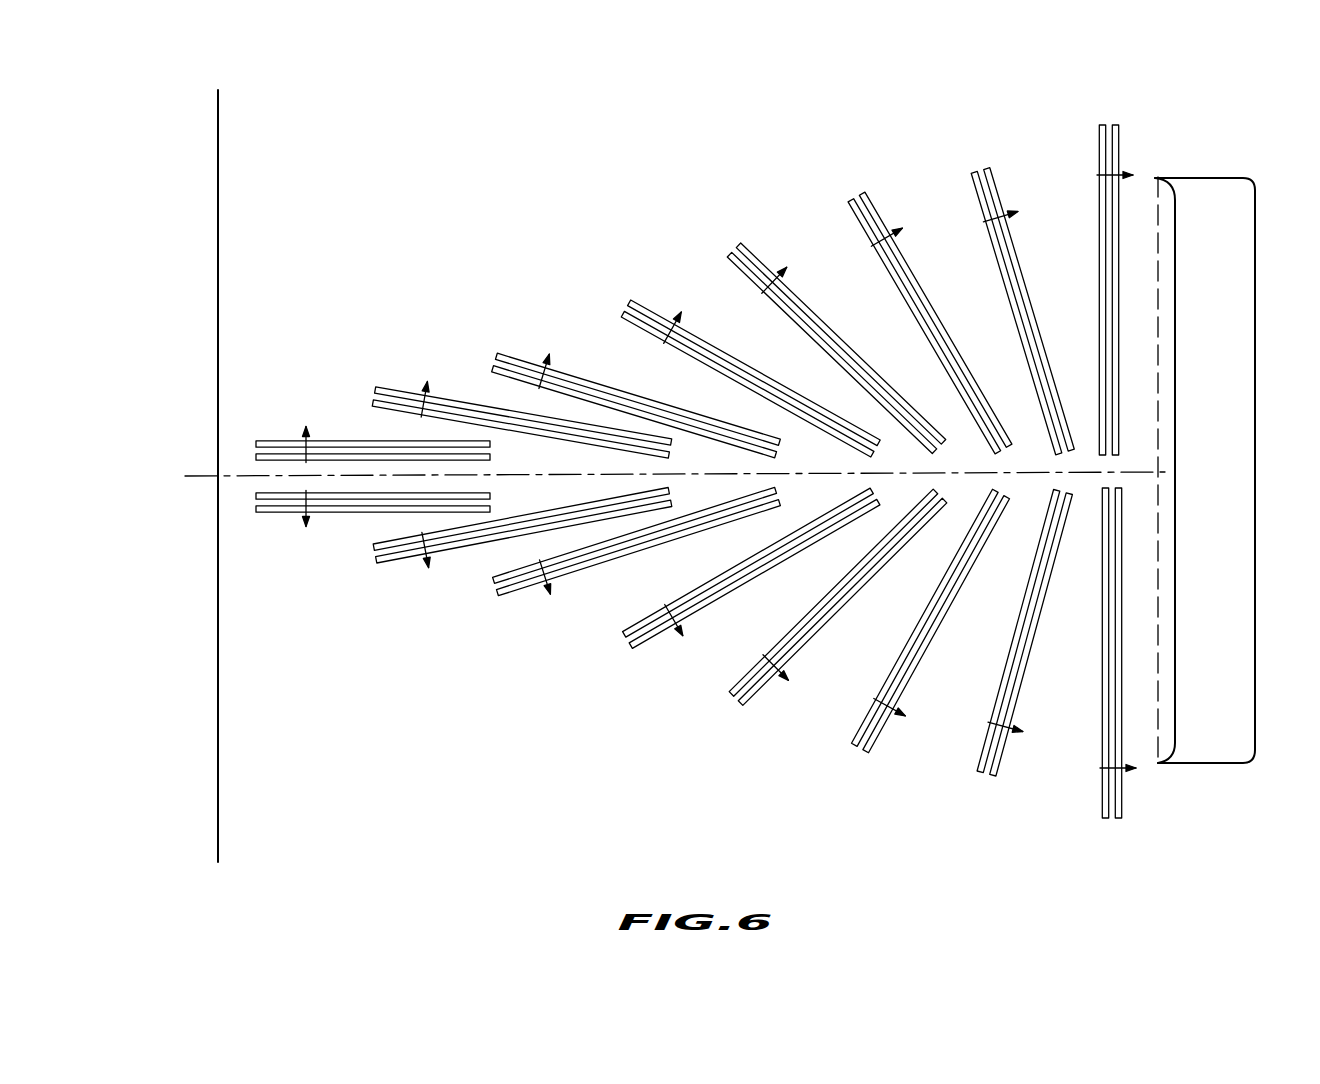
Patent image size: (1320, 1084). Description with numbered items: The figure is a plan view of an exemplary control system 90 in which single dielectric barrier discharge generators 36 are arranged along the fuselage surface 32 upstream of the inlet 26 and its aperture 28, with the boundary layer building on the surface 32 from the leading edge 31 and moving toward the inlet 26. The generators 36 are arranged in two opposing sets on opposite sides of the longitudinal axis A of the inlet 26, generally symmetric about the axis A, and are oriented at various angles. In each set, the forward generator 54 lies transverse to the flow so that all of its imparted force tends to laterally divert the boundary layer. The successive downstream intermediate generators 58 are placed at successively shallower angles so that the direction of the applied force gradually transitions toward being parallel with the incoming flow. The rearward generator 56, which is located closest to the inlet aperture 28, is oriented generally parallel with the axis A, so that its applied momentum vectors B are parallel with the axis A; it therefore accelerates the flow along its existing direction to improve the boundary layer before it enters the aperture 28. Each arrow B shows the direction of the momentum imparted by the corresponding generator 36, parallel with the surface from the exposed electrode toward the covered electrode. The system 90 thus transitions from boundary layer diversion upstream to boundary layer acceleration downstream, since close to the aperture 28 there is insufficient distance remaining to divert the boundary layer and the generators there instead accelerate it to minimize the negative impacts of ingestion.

The inlet 26 is at (1220, 178).
The aperture 28 is at (1168, 357).
The leading edge 31 is at (218, 197).
The surface 32 is at (350, 280).
The single dielectric barrier discharge generator 36 is at (326, 434).
The forward generator 54 is at (258, 441).
The rearward generator 56 is at (1098, 150).
The intermediate generator 58 is at (397, 391).
The control system 90 is at (497, 235).
The longitudinal axis A is at (1040, 470).
The arrow B is at (726, 473).